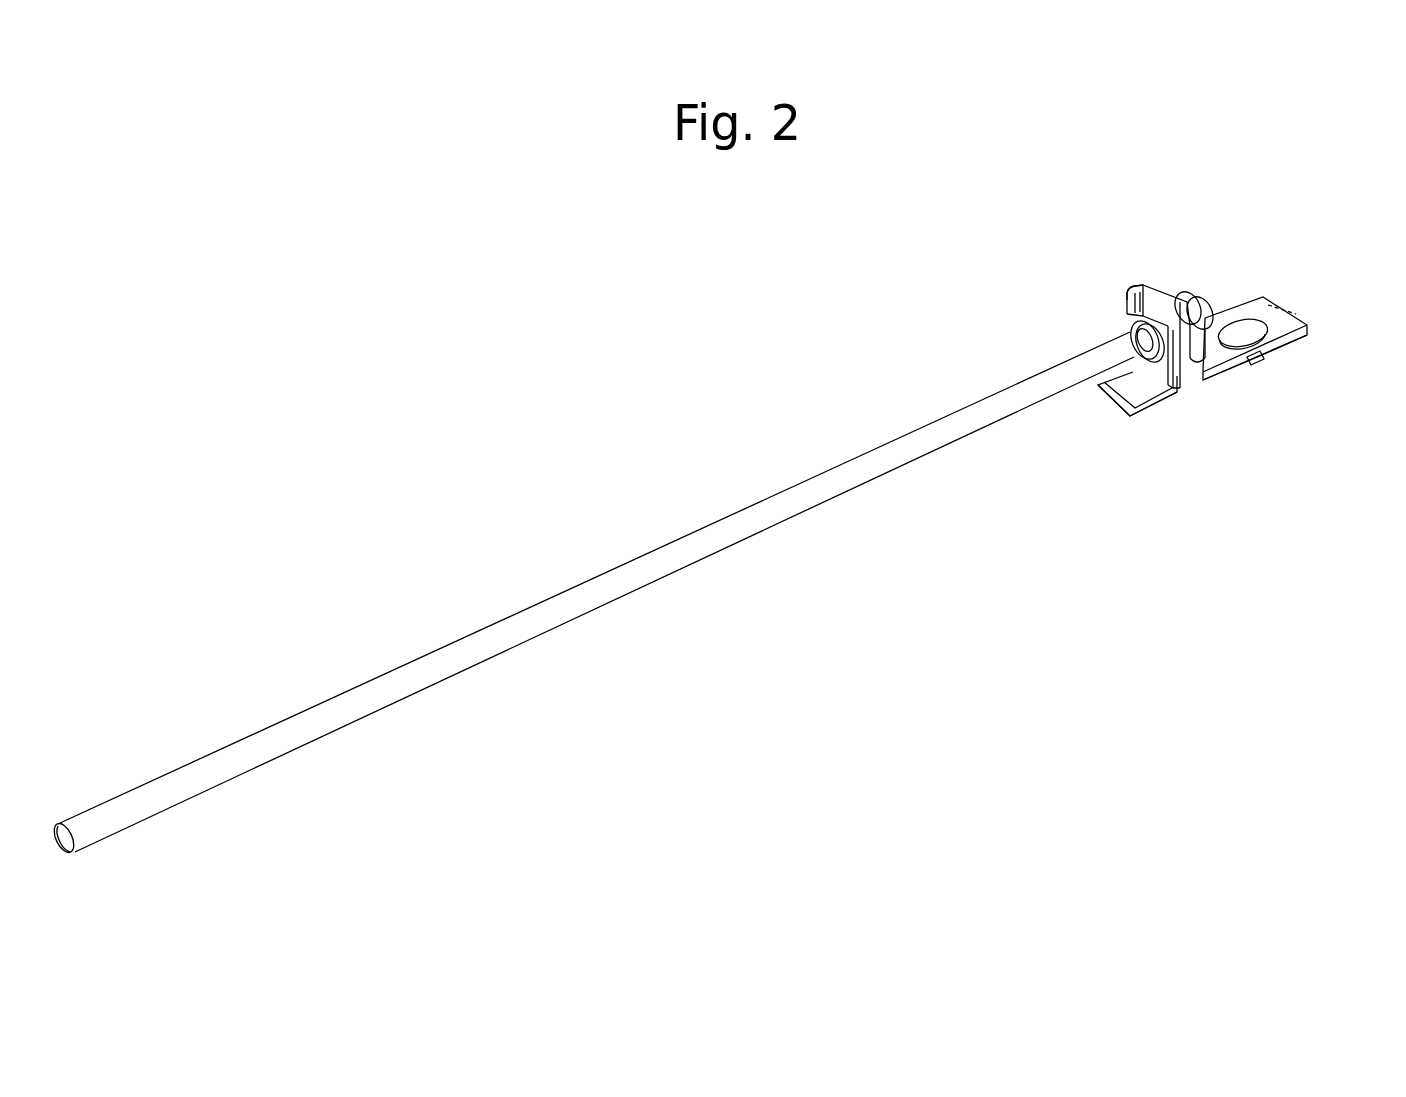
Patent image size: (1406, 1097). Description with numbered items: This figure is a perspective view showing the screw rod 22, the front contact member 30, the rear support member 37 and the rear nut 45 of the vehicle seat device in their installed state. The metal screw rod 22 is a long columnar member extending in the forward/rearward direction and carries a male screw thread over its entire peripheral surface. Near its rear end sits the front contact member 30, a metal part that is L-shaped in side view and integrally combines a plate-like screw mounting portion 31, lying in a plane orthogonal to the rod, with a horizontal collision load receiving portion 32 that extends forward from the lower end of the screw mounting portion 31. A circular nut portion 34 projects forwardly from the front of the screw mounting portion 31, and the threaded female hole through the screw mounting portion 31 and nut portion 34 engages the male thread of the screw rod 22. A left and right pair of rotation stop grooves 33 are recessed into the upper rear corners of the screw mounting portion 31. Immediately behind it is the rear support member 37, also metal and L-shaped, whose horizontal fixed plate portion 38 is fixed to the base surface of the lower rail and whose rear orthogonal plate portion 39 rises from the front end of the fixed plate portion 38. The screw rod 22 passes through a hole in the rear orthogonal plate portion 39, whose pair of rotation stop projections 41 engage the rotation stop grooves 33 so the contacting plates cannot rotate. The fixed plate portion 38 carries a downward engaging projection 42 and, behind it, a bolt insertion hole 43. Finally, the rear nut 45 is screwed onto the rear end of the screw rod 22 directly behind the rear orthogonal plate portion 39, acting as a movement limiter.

The screw rod 22 is at (527, 621).
The front contact member 30 is at (1139, 376).
The screw mounting portion 31 is at (1188, 388).
The collision load receiving portion 32 is at (1152, 290).
The rotation stop grooves 33 is at (1127, 366).
The rotation stop projections 41 is at (1133, 289).
The nut portion 34 is at (1128, 334).
The rear orthogonal plate portion 39 is at (1186, 296).
The rear support member 37 is at (1304, 351).
The fixed plate portion 38 is at (1304, 351).
The engaging projection 42 is at (1223, 382).
The bolt insertion hole 43 is at (1266, 366).
The rear nut 45 is at (1218, 311).